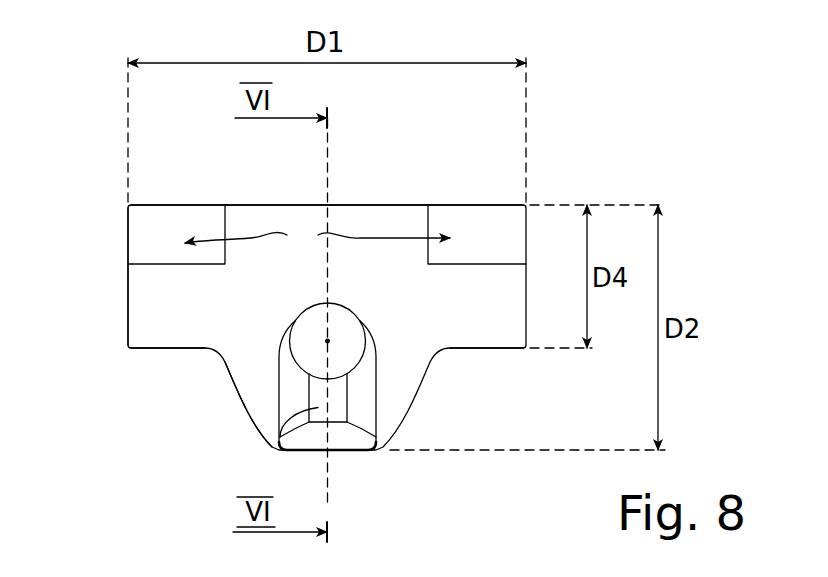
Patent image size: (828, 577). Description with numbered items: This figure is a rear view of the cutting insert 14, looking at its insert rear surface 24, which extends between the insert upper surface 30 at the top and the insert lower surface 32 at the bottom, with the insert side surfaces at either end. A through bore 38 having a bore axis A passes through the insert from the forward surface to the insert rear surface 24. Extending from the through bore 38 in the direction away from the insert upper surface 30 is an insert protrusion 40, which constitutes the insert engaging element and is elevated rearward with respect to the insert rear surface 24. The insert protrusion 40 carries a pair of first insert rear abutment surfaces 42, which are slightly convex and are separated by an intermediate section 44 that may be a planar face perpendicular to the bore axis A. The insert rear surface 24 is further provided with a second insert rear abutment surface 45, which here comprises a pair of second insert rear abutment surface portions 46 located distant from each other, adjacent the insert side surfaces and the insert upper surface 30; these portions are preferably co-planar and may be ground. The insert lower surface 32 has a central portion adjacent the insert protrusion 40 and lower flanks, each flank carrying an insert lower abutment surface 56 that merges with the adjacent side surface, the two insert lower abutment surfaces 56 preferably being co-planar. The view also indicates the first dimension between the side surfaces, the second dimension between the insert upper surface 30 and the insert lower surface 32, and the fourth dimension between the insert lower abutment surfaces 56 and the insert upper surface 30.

The cutting insert 14 is at (570, 160).
The insert rear surface 24 is at (168, 312).
The insert upper surface 30 is at (392, 187).
The insert lower surface 32 is at (175, 418).
The through bore 38 is at (302, 324).
The insert protrusion 40 is at (349, 442).
The first insert rear abutment surfaces 42 is at (290, 392).
The intermediate section 44 is at (272, 446).
The second insert rear abutment surface 45 is at (317, 238).
The second insert rear abutment surface portions 46 is at (155, 223).
The insert lower abutment surfaces 56 is at (181, 349).
The bore axis A is at (332, 338).